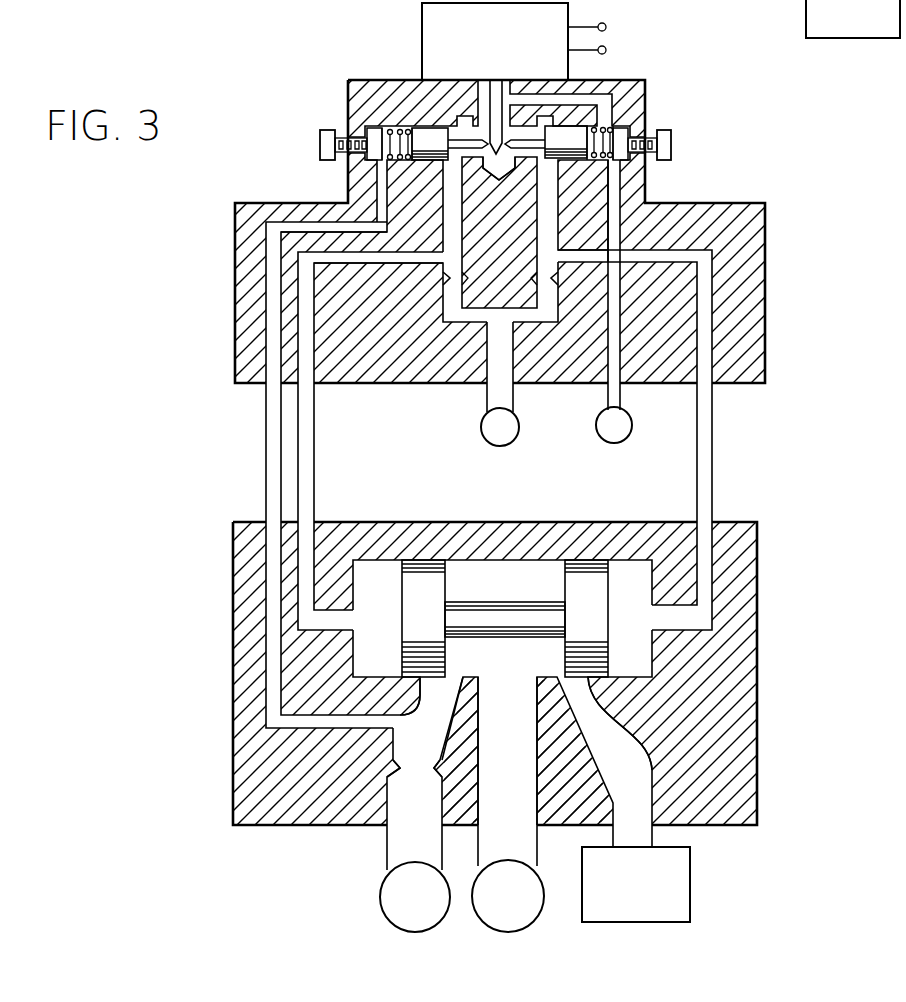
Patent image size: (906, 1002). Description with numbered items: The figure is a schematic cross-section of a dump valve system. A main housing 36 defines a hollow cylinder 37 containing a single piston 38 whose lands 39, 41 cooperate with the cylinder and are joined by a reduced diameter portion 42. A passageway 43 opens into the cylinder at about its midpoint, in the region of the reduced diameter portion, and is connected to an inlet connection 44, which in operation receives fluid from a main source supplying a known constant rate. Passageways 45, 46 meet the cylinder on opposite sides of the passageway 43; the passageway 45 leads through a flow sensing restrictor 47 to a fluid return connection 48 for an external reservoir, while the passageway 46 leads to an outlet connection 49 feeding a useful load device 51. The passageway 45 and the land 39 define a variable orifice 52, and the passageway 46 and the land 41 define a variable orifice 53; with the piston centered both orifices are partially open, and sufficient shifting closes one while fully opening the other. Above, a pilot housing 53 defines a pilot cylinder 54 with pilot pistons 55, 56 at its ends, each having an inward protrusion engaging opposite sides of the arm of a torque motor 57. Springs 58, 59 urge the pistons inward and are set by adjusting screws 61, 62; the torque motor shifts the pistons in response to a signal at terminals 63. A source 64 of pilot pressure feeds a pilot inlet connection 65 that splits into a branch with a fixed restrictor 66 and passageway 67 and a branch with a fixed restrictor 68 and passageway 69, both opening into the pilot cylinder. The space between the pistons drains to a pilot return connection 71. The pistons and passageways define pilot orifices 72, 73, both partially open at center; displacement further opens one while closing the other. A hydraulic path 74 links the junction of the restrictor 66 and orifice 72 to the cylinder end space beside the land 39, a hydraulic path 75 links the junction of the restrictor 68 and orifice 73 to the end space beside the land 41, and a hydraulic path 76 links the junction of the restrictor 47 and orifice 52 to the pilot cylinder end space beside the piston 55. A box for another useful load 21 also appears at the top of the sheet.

The useful load 21 is at (805, 6).
The main housing 36 is at (757, 695).
The hollow cylinder 37 is at (486, 556).
The piston 38 is at (558, 583).
The land 39 is at (402, 588).
The land 41 is at (608, 585).
The reduced diameter portion 42 is at (512, 601).
The passageway 43 is at (480, 692).
The inlet connection 44 is at (537, 811).
The passageway 45 is at (416, 698).
The passageway 46 is at (590, 698).
The flow sensing restrictor 47 is at (387, 768).
The fluid return connection 48 is at (387, 808).
The outlet connection 49 is at (652, 810).
The useful load device 51 is at (690, 888).
The variable orifice 52 is at (456, 680).
The variable orifice / pilot housing 53 is at (765, 298).
The pilot cylinder 54 is at (471, 127).
The pilot piston 55 is at (437, 163).
The pilot piston 56 is at (569, 170).
The torque motor 57 is at (421, 44).
The spring 58 is at (400, 126).
The spring 59 is at (597, 160).
The adjusting screw 61 is at (320, 138).
The adjusting screw 62 is at (668, 140).
The terminals 63 is at (607, 47).
The source of pilot pressure 64 is at (481, 427).
The pilot inlet connection 65 is at (487, 360).
The fixed restrictor 66 is at (442, 278).
The passageway 67 is at (463, 210).
The fixed restrictor 68 is at (559, 278).
The passageway 69 is at (536, 210).
The pilot return connection 71 is at (608, 358).
The pilot orifice 72 is at (466, 178).
The pilot orifice 73 is at (541, 178).
The hydraulic path 74 is at (314, 431).
The hydraulic path 75 is at (697, 478).
The hydraulic path 76 is at (266, 431).